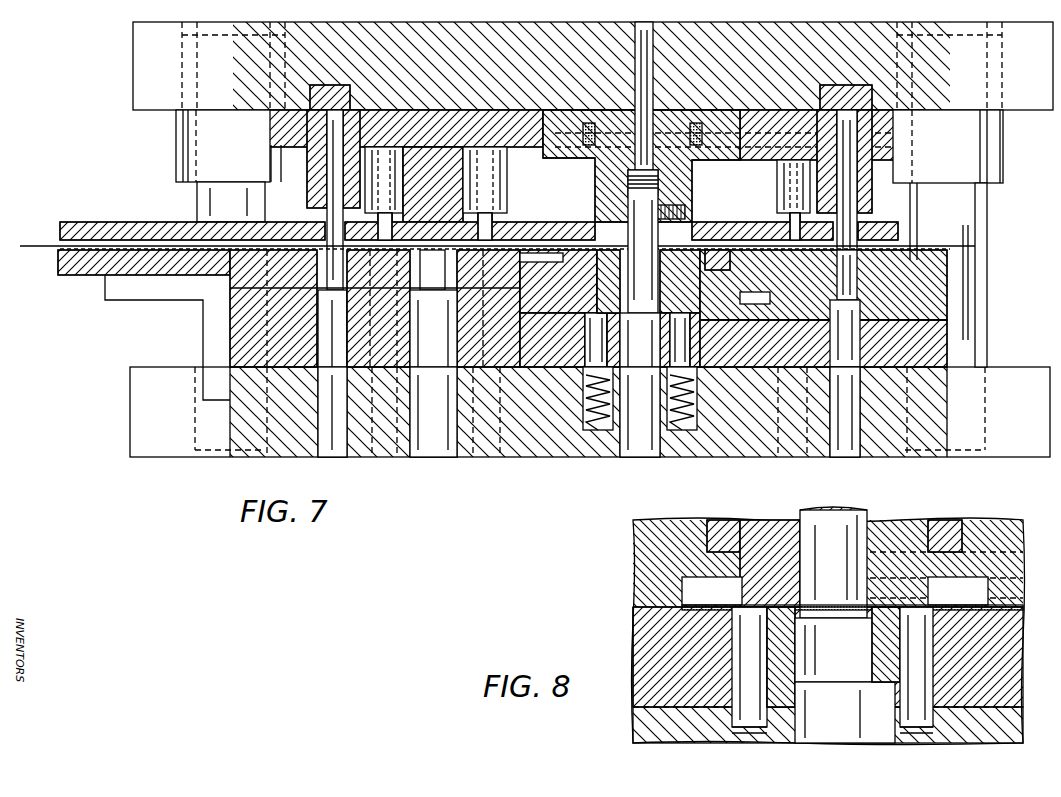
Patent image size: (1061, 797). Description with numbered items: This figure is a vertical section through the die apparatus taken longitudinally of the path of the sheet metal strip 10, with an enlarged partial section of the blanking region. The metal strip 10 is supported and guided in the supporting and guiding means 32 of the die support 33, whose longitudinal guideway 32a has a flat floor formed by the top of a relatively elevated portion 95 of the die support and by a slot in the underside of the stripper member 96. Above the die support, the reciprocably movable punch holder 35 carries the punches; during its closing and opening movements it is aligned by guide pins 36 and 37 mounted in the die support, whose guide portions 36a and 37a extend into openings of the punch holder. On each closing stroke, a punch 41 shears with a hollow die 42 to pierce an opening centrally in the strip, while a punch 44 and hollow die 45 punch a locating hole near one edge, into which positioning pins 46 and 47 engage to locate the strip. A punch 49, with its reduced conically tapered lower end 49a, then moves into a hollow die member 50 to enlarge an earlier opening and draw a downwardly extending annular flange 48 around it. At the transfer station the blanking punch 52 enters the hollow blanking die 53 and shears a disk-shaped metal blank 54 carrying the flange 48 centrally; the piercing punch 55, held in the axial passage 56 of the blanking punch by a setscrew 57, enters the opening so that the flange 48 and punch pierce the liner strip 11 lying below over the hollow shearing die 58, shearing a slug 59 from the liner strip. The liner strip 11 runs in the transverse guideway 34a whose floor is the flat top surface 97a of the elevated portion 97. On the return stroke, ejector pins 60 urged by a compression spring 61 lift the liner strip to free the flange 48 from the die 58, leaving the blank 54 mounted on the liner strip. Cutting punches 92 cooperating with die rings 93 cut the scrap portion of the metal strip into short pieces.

In FIG. 7, the sheet metal strip 10 is at (42, 246).
In FIG. 7, the liner strip 11 is at (558, 281).
In FIG. 8, the liner strip 11 is at (712, 591).
In FIG. 7, the supporting and guiding means 32 is at (160, 231).
In FIG. 7, the longitudinal guideway 32a is at (108, 240).
In FIG. 7, the die support 33 is at (576, 457).
In FIG. 7, the longitudinal guideway 34a is at (765, 300).
In FIG. 8, the longitudinal guideway 34a is at (990, 594).
In FIG. 7, the punch holder 35 is at (850, 24).
In FIG. 7, the guide pin 36 is at (197, 190).
In FIG. 7, the guide portion 36a is at (178, 129).
In FIG. 7, the guide pin 37 is at (988, 229).
In FIG. 7, the guide portion 37a is at (1003, 149).
In FIG. 7, the punch 41 is at (327, 226).
In FIG. 7, the hollow die 42 is at (306, 282).
In FIG. 7, the punch 44 is at (397, 216).
In FIG. 7, the hollow die 45 is at (377, 308).
In FIG. 7, the positioning pin 46 is at (492, 222).
In FIG. 7, the positioning pin 47 is at (780, 219).
In FIG. 7, the annular flange 48 is at (526, 262).
In FIG. 8, the annular flange 48 is at (772, 614).
In FIG. 7, the punch 49 is at (472, 186).
In FIG. 7, the reduced conically tapered lower end 49a is at (433, 373).
In FIG. 7, the hollow die member 50 is at (446, 292).
In FIG. 7, the blanking punch 52 is at (632, 206).
In FIG. 8, the blanking punch 52 is at (778, 528).
In FIG. 7, the hollow blanking die 53 is at (700, 291).
In FIG. 8, the hollow blanking die 53 is at (725, 526).
In FIG. 7, the metal blank 54 is at (598, 310).
In FIG. 8, the metal blank 54 is at (899, 588).
In FIG. 7, the piercing punch 55 is at (643, 185).
In FIG. 8, the piercing punch 55 is at (836, 522).
In FIG. 7, the axial passage 56 is at (610, 200).
In FIG. 7, the setscrew 57 is at (686, 212).
In FIG. 7, the hollow shearing die 58 is at (586, 349).
In FIG. 8, the hollow shearing die 58 is at (770, 668).
In FIG. 7, the slug 59 is at (640, 385).
In FIG. 8, the slug 59 is at (844, 620).
In FIG. 7, the ejector pin 60 is at (590, 325).
In FIG. 8, the ejector pin 60 is at (760, 650).
In FIG. 7, the compression spring 61 is at (585, 391).
In FIG. 8, the compression spring 61 is at (758, 736).
In FIG. 7, the cutting punch 92 is at (900, 231).
In FIG. 7, the die ring 93 is at (940, 282).
In FIG. 7, the elevated portion 95 is at (950, 272).
In FIG. 7, the stripper member 96 is at (545, 240).
In FIG. 7, the elevated portion 97 is at (950, 347).
In FIG. 8, the elevated portion 97 is at (648, 652).
In FIG. 7, the flat top surface 97a is at (823, 335).
In FIG. 8, the flat top surface 97a is at (676, 614).